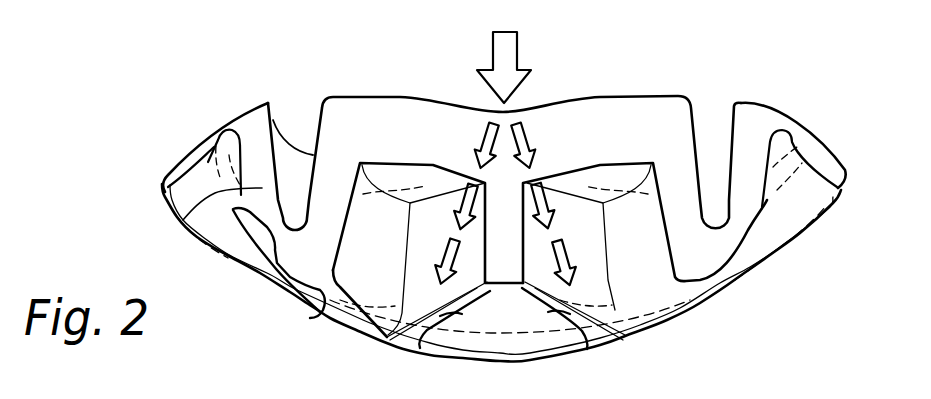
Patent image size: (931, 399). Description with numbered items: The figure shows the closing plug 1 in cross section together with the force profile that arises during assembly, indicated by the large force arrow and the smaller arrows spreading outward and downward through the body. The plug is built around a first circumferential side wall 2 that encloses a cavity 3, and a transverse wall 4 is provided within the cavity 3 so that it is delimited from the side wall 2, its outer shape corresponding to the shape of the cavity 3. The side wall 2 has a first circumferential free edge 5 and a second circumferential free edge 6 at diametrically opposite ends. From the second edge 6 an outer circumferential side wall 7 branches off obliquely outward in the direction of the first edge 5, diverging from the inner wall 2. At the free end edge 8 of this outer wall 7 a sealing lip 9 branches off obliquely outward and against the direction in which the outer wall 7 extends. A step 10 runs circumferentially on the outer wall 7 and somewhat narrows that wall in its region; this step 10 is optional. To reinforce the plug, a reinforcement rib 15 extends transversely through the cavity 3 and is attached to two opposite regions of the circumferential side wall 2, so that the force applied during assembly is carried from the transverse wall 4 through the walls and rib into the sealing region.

The closing plug 1 is at (732, 56).
The first circumferential side wall 2 is at (675, 183).
The cavity 3 is at (644, 261).
The transverse wall 4 is at (593, 147).
The first circumferential free edge 5 is at (336, 97).
The second circumferential free edge 6 is at (317, 297).
The outer circumferential side wall 7 is at (183, 218).
The free end edge 8 is at (243, 103).
The sealing lip 9 is at (182, 160).
The step 10 is at (275, 282).
The reinforcement rib 15 is at (563, 313).